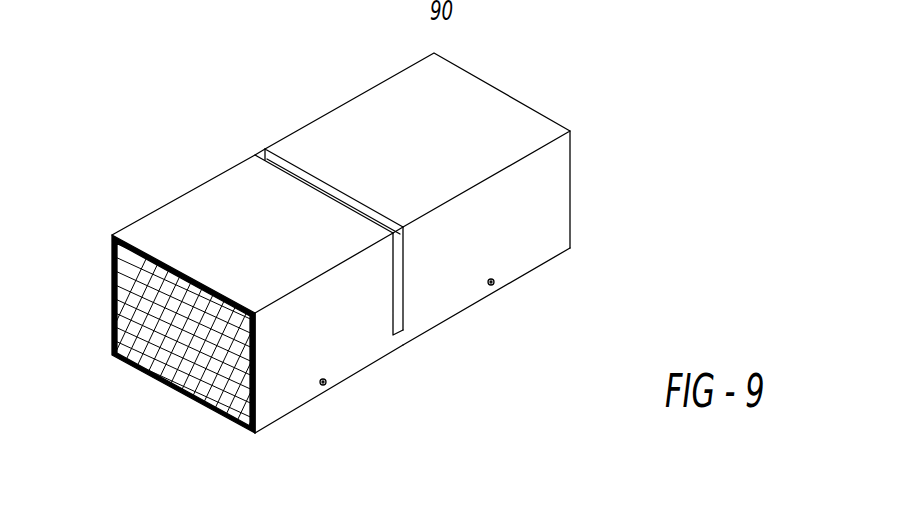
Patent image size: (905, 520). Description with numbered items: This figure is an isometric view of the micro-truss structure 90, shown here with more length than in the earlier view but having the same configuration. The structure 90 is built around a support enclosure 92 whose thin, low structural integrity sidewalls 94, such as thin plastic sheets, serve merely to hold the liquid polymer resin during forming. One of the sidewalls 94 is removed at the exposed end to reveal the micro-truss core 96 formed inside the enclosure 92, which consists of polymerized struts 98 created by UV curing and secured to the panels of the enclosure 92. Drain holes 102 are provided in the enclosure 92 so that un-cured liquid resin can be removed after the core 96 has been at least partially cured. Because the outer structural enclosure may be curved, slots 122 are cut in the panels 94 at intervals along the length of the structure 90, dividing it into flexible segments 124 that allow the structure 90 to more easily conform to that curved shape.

The micro-truss structure 90 is at (550, 76).
The support enclosure 92 is at (535, 274).
The sidewalls 94 is at (382, 345).
The micro-truss core 96 is at (180, 348).
The polymerized struts 98 is at (137, 320).
The drain holes 102 is at (329, 384).
The slots 122 is at (298, 173).
The flexible segments 124 is at (198, 222).